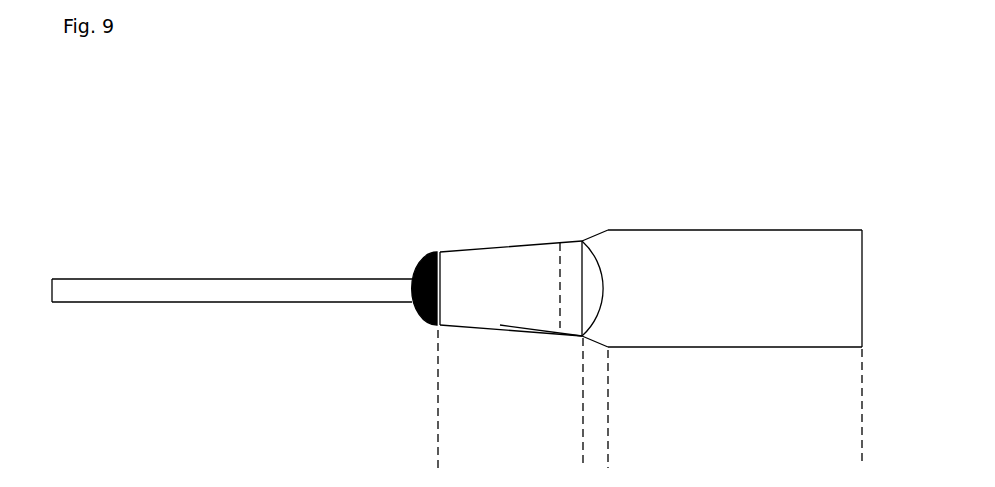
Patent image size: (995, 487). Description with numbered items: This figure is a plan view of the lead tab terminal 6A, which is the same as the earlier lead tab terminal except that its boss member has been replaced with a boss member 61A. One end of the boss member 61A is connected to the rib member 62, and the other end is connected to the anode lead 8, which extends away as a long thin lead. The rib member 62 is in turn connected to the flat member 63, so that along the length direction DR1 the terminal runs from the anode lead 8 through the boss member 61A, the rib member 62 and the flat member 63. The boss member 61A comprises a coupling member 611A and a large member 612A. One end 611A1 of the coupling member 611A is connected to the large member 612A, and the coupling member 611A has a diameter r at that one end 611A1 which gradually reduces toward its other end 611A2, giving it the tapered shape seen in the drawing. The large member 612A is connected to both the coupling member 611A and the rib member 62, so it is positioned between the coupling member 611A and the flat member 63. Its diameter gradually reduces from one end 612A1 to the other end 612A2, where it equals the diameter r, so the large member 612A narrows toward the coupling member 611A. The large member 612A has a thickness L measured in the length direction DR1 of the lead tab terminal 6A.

The lead tab terminal 6A is at (542, 89).
The anode lead 8 is at (250, 287).
The coupling member 611A is at (479, 262).
The one end of the coupling member 611A1 is at (557, 297).
The other end of the coupling member 611A2 is at (441, 296).
The large member 612A is at (574, 247).
The one end of the large member 612A1 is at (599, 285).
The other end of the large member 612A2 is at (552, 260).
The boss member 61A is at (583, 449).
The rib member 62 is at (596, 449).
The flat member 63 is at (862, 448).
The length direction DR1 is at (680, 142).